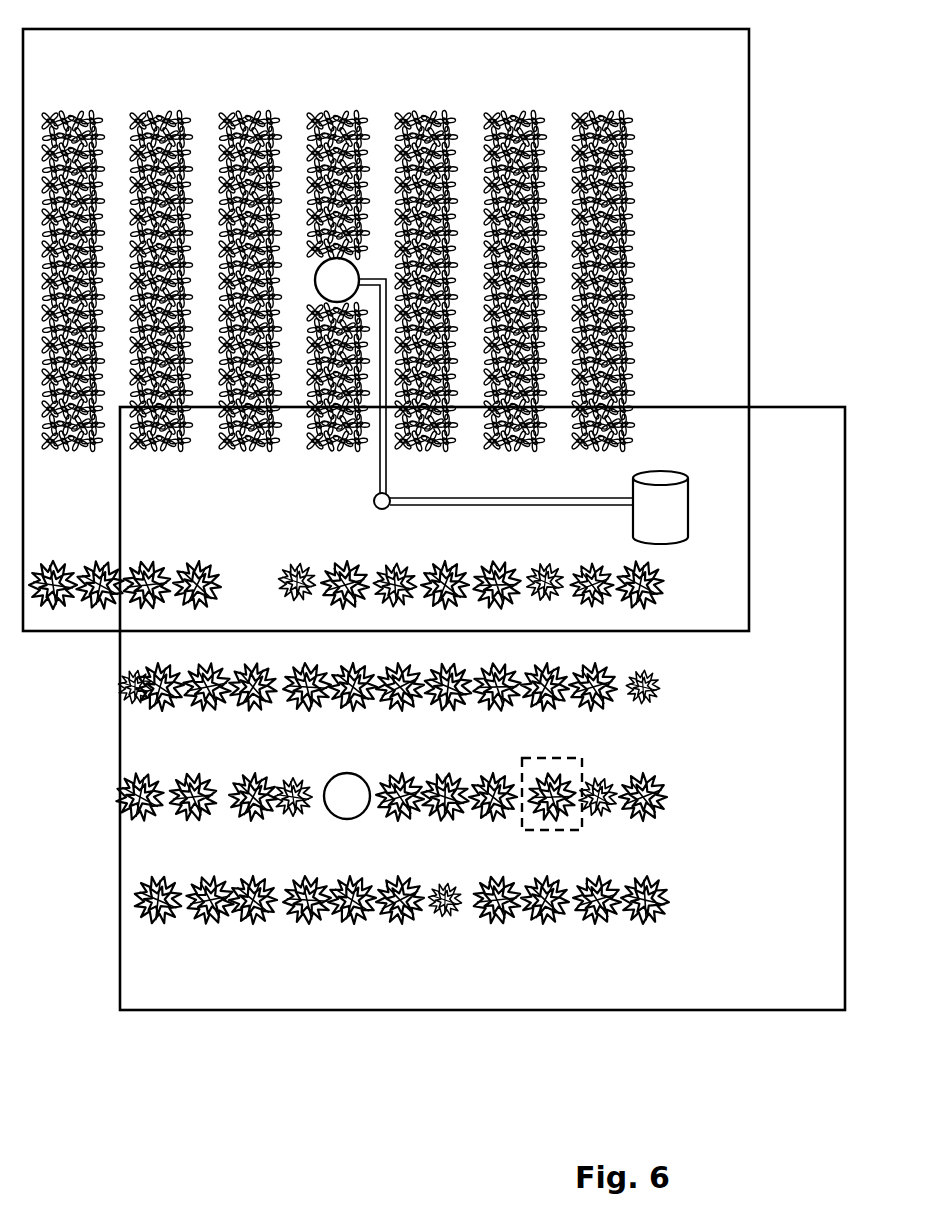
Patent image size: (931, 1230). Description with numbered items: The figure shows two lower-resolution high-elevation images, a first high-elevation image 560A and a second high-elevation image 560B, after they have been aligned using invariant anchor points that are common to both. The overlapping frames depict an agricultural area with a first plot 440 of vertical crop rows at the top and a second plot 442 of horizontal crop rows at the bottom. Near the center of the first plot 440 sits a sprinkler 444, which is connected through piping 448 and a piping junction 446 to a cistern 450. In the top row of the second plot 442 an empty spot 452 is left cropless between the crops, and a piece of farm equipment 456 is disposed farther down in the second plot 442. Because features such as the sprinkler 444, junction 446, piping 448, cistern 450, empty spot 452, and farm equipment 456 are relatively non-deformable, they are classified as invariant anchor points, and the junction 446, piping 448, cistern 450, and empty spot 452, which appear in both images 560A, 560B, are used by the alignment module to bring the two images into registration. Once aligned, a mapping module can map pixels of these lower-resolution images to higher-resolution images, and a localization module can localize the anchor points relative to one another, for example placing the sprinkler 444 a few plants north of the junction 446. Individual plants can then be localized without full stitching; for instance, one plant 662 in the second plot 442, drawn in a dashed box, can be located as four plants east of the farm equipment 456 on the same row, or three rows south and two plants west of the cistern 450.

The first high-elevation image 560A is at (749, 184).
The second high-elevation image 560B is at (388, 1011).
The first plot 440 is at (676, 267).
The second plot 442 is at (690, 761).
The sprinkler 444 is at (316, 280).
The piping junction 446 is at (374, 498).
The piping 448 is at (478, 498).
The cistern 450 is at (660, 471).
The empty spot 452 is at (256, 556).
The farm equipment 456 is at (357, 761).
The plant 662 is at (567, 831).